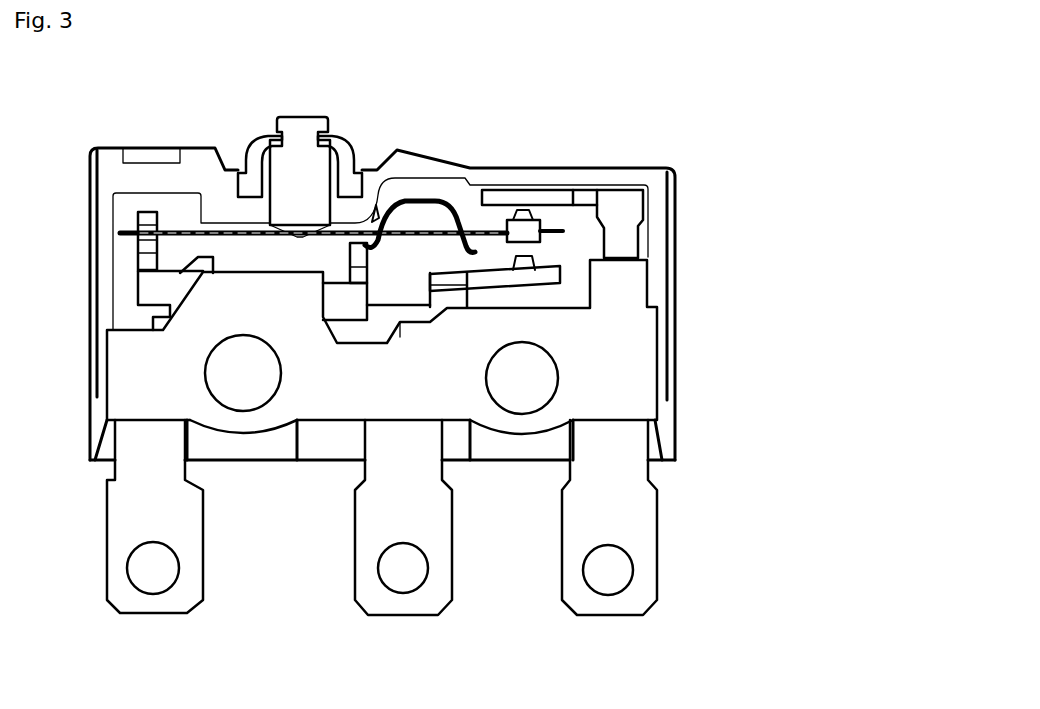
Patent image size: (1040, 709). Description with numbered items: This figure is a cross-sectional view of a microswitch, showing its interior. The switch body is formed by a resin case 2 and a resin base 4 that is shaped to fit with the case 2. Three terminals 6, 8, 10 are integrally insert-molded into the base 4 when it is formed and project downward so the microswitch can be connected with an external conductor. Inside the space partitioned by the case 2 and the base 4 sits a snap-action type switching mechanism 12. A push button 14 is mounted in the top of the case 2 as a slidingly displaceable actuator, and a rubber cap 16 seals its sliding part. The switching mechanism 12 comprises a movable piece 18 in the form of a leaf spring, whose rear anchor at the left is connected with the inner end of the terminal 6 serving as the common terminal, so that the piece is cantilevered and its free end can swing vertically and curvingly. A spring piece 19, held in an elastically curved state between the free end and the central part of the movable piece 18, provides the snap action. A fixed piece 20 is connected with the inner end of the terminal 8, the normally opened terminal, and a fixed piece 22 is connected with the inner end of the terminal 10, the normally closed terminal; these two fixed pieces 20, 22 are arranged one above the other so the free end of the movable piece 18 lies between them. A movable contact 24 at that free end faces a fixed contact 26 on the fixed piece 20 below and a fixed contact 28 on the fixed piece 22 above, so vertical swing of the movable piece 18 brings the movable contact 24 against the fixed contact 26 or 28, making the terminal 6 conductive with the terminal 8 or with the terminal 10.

The case 2 is at (702, 225).
The base 4 is at (702, 378).
The terminal 6 is at (152, 644).
The terminal 8 is at (403, 645).
The terminal 10 is at (608, 645).
The snap-action type switching mechanism 12 is at (372, 216).
The push button 14 is at (303, 91).
The rubber cap 16 is at (273, 137).
The movable piece 18 is at (220, 240).
The spring piece 19 is at (433, 200).
The fixed piece 20 is at (508, 494).
The fixed piece 22 is at (561, 192).
The movable contact 24 is at (507, 218).
The fixed contact 26 is at (702, 250).
The fixed contact 28 is at (523, 212).